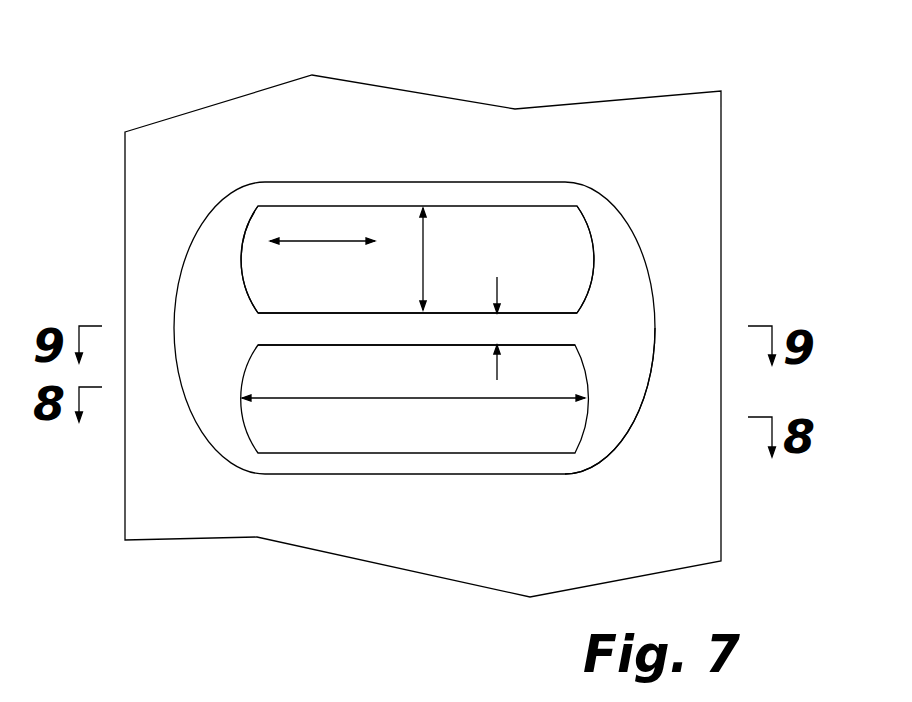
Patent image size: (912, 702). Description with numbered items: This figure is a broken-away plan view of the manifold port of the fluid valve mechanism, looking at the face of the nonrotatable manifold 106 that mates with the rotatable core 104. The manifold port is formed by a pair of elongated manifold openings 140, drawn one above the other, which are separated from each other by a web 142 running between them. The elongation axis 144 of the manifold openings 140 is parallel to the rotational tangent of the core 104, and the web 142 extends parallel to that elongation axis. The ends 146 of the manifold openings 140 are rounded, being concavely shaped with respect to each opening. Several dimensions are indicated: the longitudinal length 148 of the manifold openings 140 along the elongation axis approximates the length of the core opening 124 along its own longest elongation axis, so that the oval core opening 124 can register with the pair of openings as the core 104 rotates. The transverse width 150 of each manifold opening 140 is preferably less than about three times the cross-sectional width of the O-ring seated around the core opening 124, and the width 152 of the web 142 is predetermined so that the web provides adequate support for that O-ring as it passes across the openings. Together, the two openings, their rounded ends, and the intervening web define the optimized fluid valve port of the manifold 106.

The core 104 is at (651, 88).
The manifold 106 is at (635, 289).
The core opening 124 is at (653, 353).
The manifold openings 140 is at (275, 362).
The web 142 is at (340, 345).
The elongation axis 144 is at (316, 240).
The ends of the manifold openings 146 is at (244, 262).
The longitudinal length 148 is at (348, 398).
The transverse width 150 is at (425, 258).
The width of the web 152 is at (500, 327).